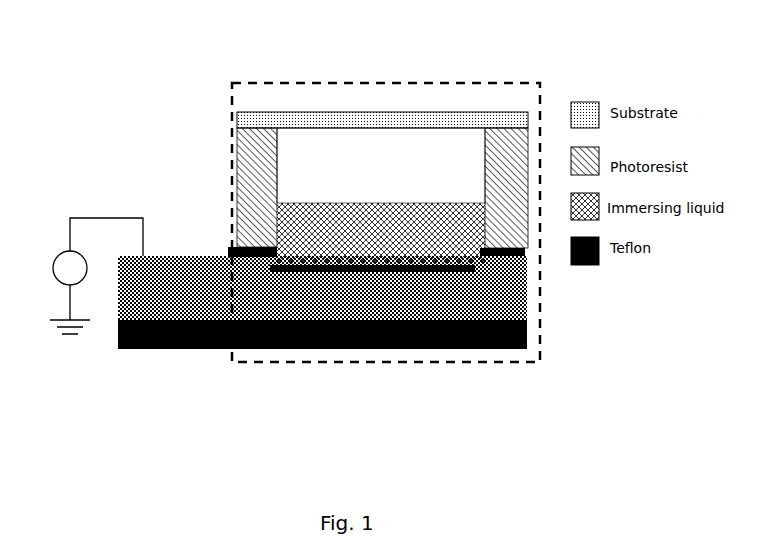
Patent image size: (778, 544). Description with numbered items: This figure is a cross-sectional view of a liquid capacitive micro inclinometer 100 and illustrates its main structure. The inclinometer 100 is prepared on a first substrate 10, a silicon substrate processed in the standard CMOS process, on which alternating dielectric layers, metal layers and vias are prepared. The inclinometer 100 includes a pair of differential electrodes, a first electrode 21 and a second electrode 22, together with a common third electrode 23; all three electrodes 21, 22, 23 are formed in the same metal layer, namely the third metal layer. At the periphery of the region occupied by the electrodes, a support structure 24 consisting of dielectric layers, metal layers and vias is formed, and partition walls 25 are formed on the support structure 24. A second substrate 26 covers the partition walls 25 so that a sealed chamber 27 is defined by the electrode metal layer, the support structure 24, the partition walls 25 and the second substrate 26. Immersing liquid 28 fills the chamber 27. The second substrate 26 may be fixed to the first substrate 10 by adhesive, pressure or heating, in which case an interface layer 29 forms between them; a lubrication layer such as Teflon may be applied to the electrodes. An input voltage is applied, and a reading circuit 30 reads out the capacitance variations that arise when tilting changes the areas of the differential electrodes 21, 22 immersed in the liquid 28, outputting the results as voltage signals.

The inclinometer 100 is at (335, 223).
The first substrate 10 is at (527, 328).
The first electrode 21 is at (302, 277).
The second electrode 22 is at (452, 275).
The third electrode 23 is at (373, 273).
The support structure 24 is at (527, 283).
The partition walls 25 is at (233, 150).
The second substrate 26 is at (233, 118).
The sealed chamber 27 is at (395, 167).
The immersing liquid 28 is at (370, 213).
The interface layer 29 is at (233, 235).
The reading circuit 30 is at (176, 234).